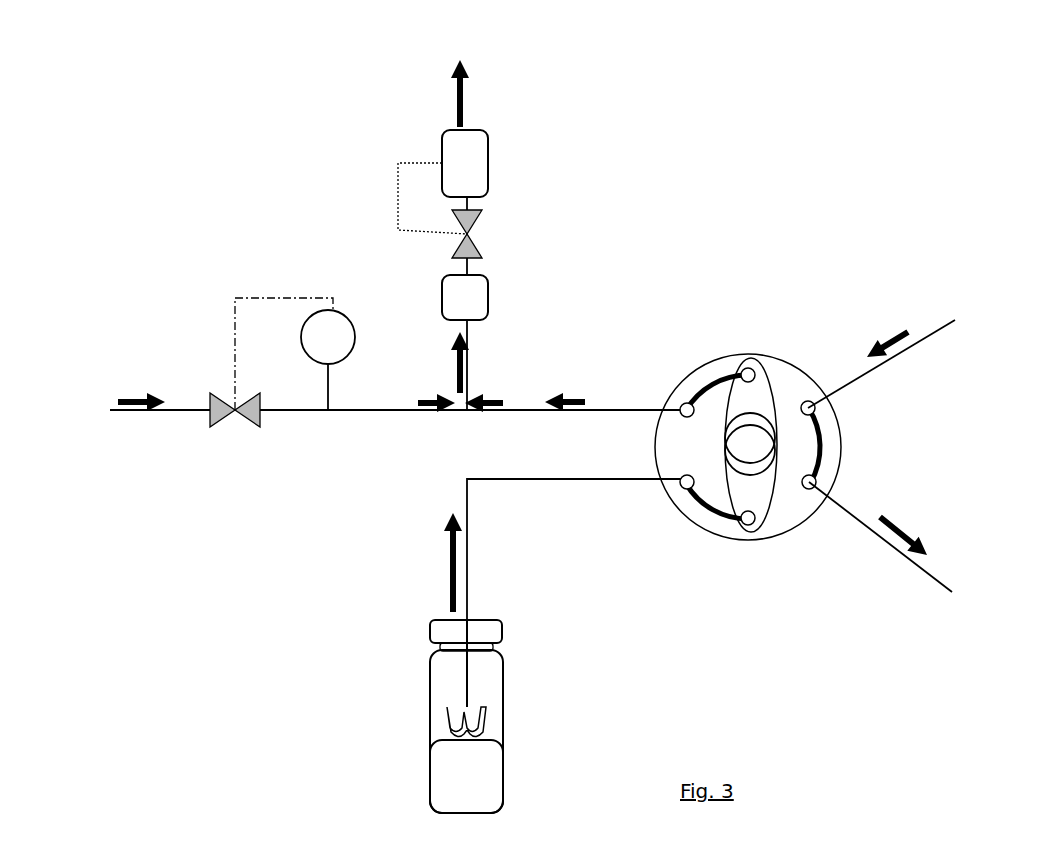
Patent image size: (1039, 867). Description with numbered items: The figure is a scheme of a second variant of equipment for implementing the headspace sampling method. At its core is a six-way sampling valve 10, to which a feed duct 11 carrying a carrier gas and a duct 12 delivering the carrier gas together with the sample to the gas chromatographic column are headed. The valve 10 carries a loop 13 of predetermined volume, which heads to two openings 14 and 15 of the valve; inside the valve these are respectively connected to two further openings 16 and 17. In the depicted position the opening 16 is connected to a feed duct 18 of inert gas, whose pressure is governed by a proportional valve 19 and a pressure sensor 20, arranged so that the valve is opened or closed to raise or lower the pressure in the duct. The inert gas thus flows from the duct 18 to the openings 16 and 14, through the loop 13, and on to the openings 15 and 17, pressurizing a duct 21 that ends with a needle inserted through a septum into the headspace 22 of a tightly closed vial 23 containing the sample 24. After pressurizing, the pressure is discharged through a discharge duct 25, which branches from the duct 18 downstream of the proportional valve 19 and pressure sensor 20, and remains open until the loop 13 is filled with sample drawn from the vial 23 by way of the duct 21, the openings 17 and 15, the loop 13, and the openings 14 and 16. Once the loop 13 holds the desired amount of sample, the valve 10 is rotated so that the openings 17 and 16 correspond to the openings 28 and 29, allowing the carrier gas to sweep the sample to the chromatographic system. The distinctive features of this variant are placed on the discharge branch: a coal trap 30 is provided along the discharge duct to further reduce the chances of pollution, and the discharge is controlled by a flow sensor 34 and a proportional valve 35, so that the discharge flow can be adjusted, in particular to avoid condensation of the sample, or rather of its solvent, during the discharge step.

The 6-way sampling valve 10 is at (790, 520).
The feed duct 11 is at (903, 353).
The duct 12 is at (935, 578).
The loop 13 is at (740, 445).
The opening 14 is at (749, 367).
The opening 15 is at (743, 523).
The opening 16 is at (686, 402).
The opening 17 is at (680, 482).
The feed duct 18 is at (360, 412).
The proportional valve 19 is at (233, 415).
The pressure sensor 20 is at (355, 330).
The duct 21 is at (500, 480).
The headspace 22 is at (430, 672).
The vial 23 is at (503, 757).
The sample 24 is at (460, 785).
The discharge duct 25 is at (465, 365).
The opening 28 is at (808, 401).
The opening 29 is at (816, 481).
The trap 30 is at (467, 298).
The flow sensor 34 is at (467, 160).
The proportional valve 35 is at (470, 232).